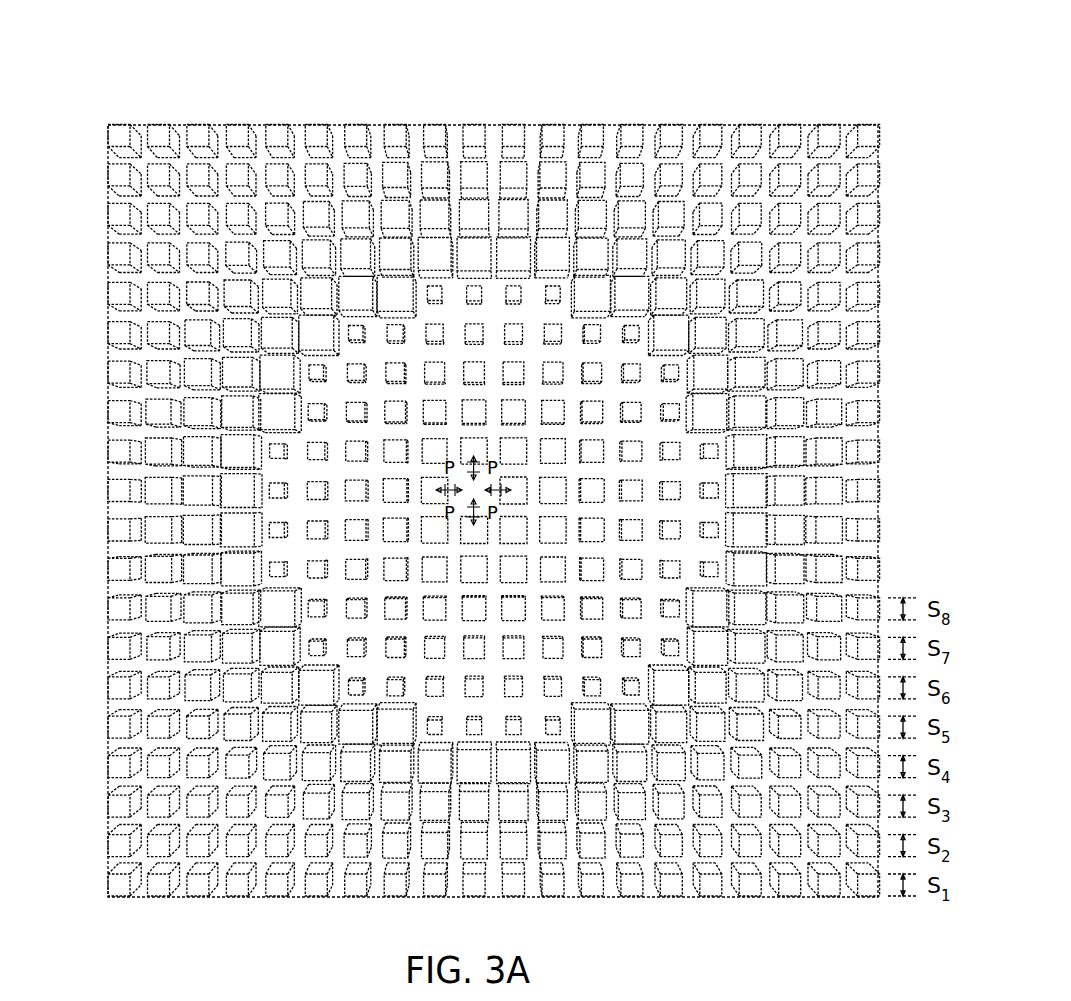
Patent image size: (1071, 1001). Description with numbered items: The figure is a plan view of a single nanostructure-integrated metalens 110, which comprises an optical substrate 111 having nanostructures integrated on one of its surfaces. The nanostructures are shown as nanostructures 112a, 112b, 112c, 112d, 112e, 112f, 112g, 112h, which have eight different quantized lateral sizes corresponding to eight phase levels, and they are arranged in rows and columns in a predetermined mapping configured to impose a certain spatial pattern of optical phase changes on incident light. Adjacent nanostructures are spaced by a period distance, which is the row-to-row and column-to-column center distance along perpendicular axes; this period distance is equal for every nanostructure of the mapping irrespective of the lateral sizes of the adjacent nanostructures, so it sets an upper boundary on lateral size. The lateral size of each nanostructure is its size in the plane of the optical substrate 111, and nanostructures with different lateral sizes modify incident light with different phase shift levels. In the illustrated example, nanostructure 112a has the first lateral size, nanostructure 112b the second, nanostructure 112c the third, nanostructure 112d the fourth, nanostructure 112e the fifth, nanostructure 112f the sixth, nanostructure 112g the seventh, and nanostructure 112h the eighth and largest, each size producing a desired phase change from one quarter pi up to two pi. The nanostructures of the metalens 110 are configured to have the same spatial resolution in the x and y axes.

The single nanostructure-integrated metalens 110 is at (716, 81).
The optical substrate 111 is at (846, 135).
The nanostructure 112a is at (119, 888).
The nanostructure 112b is at (119, 849).
The nanostructure 112c is at (119, 809).
The nanostructure 112d is at (119, 770).
The nanostructure 112e is at (119, 730).
The nanostructure 112f is at (119, 691).
The nanostructure 112g is at (119, 652).
The nanostructure 112h is at (119, 612).